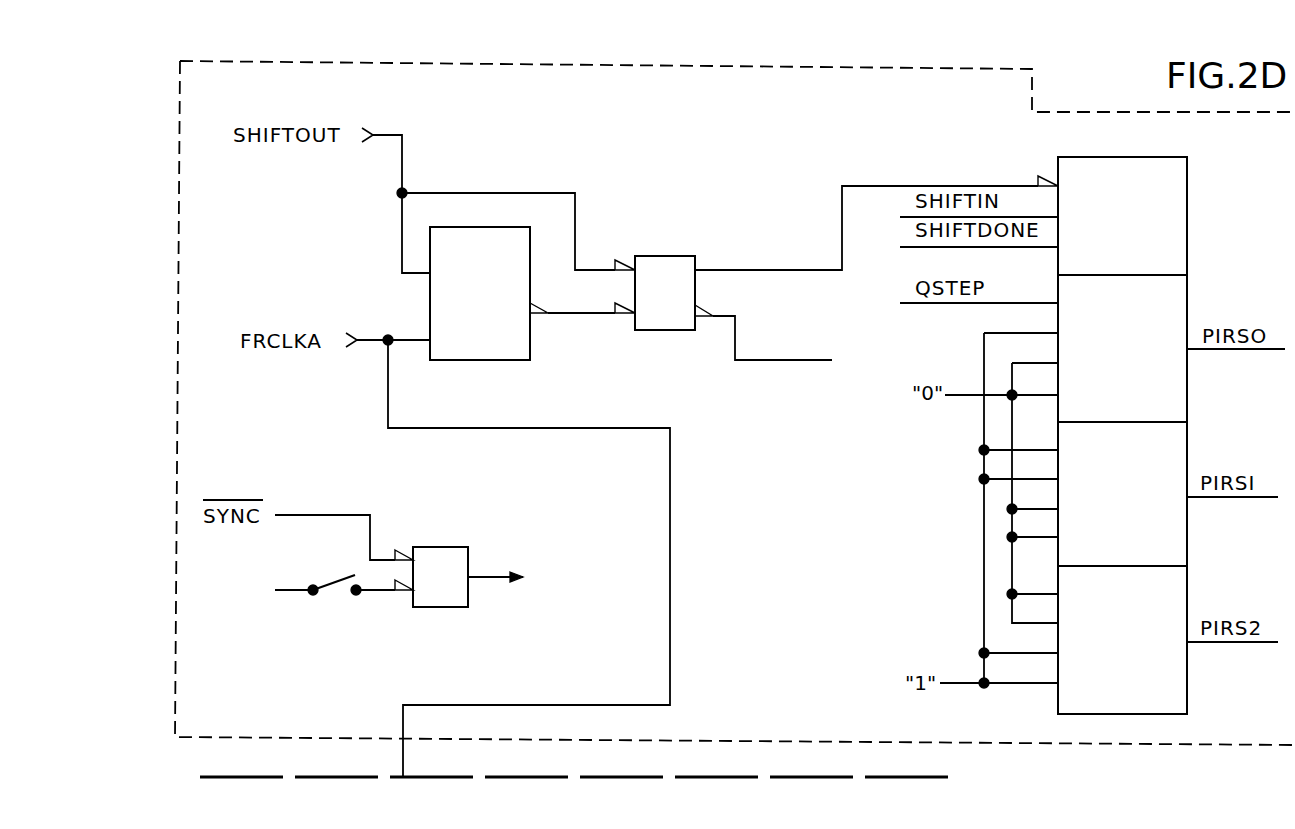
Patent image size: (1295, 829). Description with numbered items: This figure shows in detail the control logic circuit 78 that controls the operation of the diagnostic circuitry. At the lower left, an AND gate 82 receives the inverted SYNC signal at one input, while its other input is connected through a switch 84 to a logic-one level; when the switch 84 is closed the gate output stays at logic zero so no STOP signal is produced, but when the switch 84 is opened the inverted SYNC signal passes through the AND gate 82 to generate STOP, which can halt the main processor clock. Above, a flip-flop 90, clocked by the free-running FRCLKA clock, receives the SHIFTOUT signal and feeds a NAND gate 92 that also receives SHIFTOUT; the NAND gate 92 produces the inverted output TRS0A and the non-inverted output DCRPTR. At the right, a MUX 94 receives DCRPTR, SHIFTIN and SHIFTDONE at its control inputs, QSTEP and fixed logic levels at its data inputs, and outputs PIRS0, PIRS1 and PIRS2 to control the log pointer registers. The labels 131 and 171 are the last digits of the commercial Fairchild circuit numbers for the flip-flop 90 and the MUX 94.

The control logic circuit 78 is at (1056, 112).
The AND gate 82 is at (455, 553).
The switch 84 is at (333, 593).
The flip-flop 90 is at (532, 310).
The NAND gate 92 is at (681, 256).
The MUX 94 is at (1155, 435).
The circuit number of flip-flop 131 is at (480, 293).
The circuit number of multiplexer 171 is at (1122, 435).